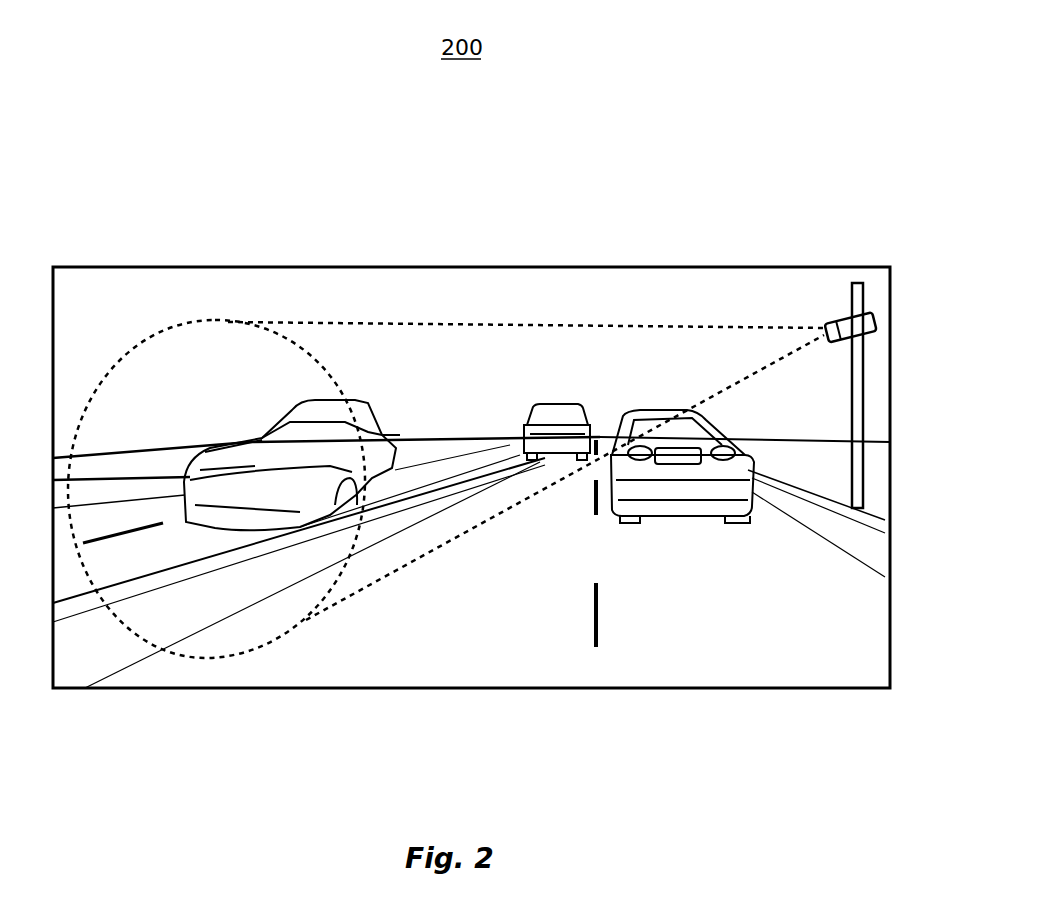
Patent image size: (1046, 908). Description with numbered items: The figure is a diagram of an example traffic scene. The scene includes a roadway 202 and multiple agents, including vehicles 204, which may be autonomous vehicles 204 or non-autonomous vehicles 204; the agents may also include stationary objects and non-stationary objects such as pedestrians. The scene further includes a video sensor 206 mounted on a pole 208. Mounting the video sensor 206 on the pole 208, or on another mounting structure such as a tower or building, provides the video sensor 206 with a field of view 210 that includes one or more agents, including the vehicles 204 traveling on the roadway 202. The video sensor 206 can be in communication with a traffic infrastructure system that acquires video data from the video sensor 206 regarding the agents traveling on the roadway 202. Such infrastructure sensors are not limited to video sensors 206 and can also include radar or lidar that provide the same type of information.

The roadway 202 is at (450, 645).
The vehicles 204 is at (543, 303).
The video sensor 206 is at (877, 322).
The pole 208 is at (864, 388).
The field of view 210 is at (110, 650).